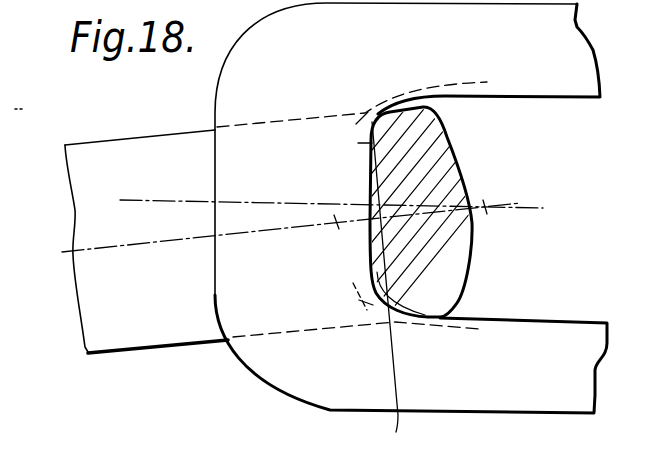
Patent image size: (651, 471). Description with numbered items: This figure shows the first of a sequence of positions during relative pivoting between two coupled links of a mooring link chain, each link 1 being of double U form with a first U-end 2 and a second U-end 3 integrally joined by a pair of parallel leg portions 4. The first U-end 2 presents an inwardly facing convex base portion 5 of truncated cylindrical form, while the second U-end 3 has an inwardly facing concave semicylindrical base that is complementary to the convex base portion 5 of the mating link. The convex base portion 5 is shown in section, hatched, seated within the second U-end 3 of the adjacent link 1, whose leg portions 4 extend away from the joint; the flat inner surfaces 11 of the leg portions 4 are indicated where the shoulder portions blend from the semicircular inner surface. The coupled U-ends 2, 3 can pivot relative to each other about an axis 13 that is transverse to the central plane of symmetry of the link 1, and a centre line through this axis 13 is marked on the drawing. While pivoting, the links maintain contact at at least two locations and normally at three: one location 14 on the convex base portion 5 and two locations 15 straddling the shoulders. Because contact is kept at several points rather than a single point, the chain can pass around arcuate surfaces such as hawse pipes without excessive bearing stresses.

The link 1 is at (279, 19).
The first U-end 2 is at (245, 147).
The second U-end 3 is at (458, 182).
The parallel leg portions 4 is at (528, 78).
The convex base portion 5 is at (320, 267).
The flat inner surfaces 11 is at (387, 295).
The pivot axis 13 is at (486, 210).
The contact location on convex surface 14 is at (370, 143).
The contact locations straddling shoulders 15 is at (370, 303).